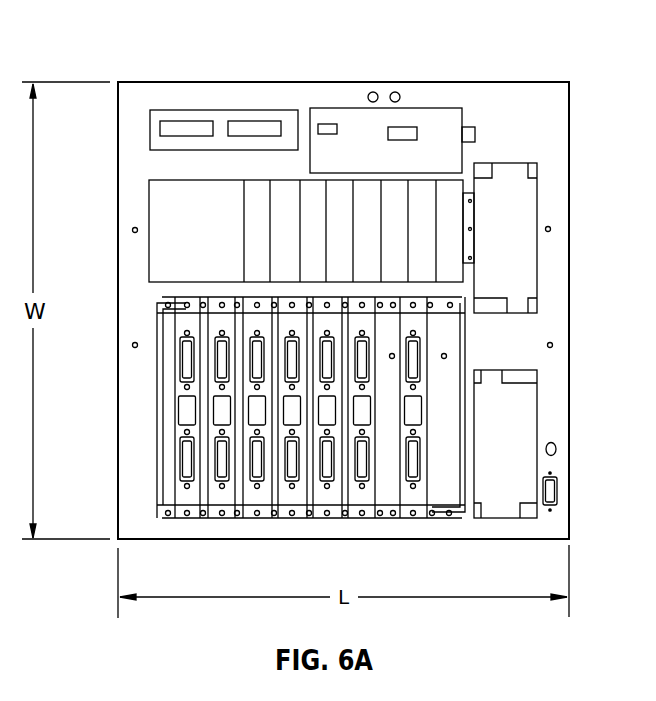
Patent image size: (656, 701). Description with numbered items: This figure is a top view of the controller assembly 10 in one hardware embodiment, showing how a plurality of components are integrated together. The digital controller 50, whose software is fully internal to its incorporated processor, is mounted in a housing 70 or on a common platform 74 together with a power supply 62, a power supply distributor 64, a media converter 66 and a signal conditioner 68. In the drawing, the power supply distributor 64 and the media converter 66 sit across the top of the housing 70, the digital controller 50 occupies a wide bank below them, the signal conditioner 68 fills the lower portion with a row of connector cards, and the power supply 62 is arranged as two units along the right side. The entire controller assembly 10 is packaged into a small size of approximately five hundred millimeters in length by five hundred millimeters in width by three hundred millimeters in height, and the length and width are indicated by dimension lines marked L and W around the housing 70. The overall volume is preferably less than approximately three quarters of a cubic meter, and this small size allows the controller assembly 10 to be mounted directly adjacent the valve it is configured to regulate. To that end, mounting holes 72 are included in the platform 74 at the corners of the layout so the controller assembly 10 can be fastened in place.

The controller assembly 10 is at (86, 49).
The digital controller 50 is at (164, 200).
The power supply 62 is at (522, 250).
The power supply distributor 64 is at (215, 109).
The media converter 66 is at (430, 120).
The signal conditioner 68 is at (166, 410).
The housing 70 is at (500, 82).
The mounting holes 72 is at (132, 230).
The common platform 74 is at (571, 140).